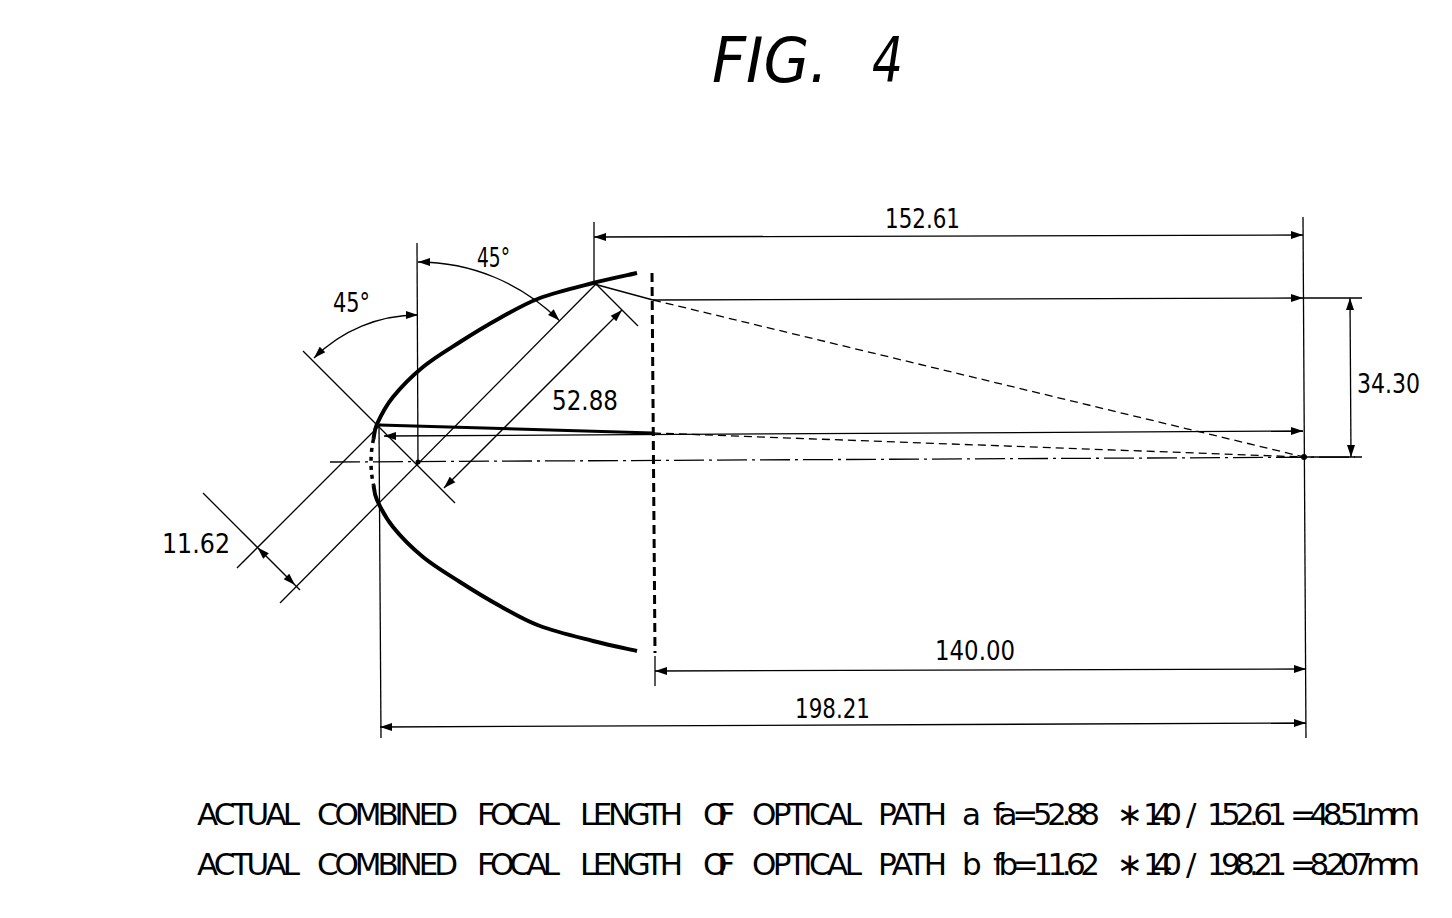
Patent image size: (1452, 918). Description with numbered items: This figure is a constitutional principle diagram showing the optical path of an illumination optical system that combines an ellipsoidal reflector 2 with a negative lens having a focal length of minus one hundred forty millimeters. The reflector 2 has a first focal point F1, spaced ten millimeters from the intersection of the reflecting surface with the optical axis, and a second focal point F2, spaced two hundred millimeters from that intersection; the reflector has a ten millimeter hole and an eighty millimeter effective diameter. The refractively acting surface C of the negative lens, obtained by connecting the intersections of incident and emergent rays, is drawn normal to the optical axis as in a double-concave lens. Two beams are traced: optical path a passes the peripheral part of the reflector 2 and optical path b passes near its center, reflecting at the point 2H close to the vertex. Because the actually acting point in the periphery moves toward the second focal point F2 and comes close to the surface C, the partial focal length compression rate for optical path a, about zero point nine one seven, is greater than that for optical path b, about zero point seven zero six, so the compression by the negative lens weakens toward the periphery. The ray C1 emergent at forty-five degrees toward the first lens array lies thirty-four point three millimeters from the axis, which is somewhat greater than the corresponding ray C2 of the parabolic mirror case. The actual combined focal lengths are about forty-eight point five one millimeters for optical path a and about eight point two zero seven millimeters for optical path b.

The paraboloidal mirror 2 is at (463, 585).
The reflection point on mirror for optical path b 2H is at (370, 452).
The refractively acting surface C is at (655, 528).
The ray C1 is at (565, 290).
The ray C2 is at (325, 380).
The first focal point F1 is at (425, 472).
The second focal point F2 is at (1306, 460).
The optical path a is at (1140, 298).
The optical path b is at (1240, 431).